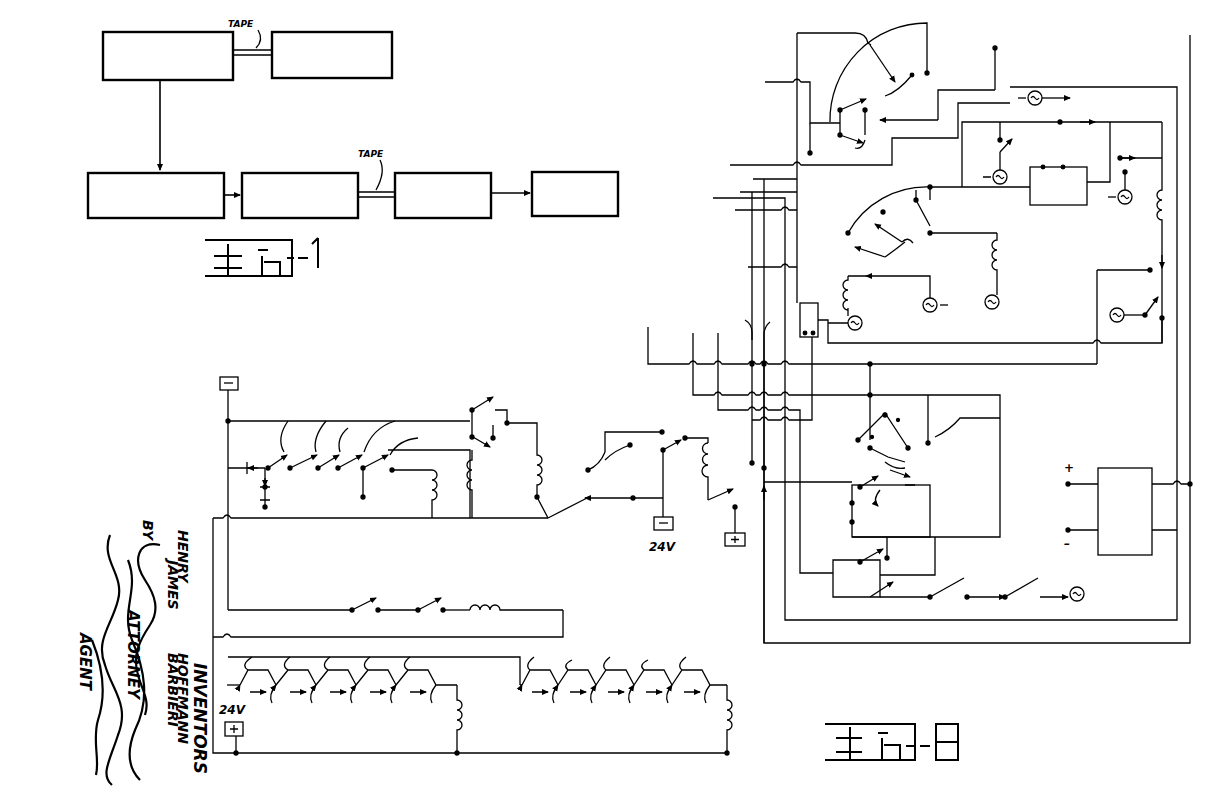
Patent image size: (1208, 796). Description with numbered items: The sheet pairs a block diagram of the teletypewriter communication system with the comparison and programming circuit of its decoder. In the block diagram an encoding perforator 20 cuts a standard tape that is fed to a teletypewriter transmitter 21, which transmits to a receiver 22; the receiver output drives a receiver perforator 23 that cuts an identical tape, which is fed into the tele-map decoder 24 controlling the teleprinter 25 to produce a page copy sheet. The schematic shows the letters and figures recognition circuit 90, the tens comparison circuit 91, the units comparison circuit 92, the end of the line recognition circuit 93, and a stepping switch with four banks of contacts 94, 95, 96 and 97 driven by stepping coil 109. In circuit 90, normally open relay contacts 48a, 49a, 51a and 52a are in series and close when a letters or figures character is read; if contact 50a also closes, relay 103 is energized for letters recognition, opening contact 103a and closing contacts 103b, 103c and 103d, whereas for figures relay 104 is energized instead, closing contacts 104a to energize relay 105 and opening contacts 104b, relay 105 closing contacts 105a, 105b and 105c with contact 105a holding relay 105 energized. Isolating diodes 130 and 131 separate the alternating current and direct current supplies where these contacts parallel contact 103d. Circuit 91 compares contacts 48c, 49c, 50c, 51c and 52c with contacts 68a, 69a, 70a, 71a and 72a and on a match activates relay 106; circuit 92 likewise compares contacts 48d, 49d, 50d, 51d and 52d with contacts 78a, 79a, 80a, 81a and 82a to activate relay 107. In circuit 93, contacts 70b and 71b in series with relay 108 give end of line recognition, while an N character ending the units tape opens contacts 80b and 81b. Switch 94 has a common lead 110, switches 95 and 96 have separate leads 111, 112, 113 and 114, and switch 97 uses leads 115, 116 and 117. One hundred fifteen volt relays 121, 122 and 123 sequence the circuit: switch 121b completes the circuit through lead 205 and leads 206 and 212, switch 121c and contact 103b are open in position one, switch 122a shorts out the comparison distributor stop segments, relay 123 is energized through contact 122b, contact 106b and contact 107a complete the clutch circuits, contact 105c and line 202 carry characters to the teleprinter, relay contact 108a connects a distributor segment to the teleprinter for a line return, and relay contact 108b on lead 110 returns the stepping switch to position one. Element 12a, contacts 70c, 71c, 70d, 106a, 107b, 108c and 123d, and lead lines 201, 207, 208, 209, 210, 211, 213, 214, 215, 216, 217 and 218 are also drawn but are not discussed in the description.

In FIG. 1, the encoding perforator 20 is at (334, 32).
In FIG. 1, the teletypewriter transmitter 21 is at (148, 32).
In FIG. 1, the receiver 22 is at (176, 173).
In FIG. 1, the receiver perforator 23 is at (294, 173).
In FIG. 1, the tele-map decoder 24 is at (444, 173).
In FIG. 1, the teleprinter 25 is at (568, 172).
In FIG. 6, the relay device 12a is at (795, 310).
In FIG. 6, the relay contact 48a is at (274, 436).
In FIG. 6, the relay contact 49a is at (307, 436).
In FIG. 6, the relay contact 50a is at (415, 471).
In FIG. 6, the relay contact 51a is at (335, 447).
In FIG. 6, the relay contact 52a is at (372, 436).
In FIG. 6, the relay contact 48c is at (258, 666).
In FIG. 6, the relay contact 49c is at (296, 666).
In FIG. 6, the relay contact 50c is at (336, 666).
In FIG. 6, the relay contact 51c is at (376, 666).
In FIG. 6, the relay contact 52c is at (426, 666).
In FIG. 6, the relay contact 48d is at (540, 667).
In FIG. 6, the relay contact 49d is at (577, 670).
In FIG. 6, the relay contact 50d is at (615, 666).
In FIG. 6, the relay contact 51d is at (652, 670).
In FIG. 6, the relay contact 52d is at (699, 666).
In FIG. 6, the relay contact 68a is at (274, 702).
In FIG. 6, the relay contact 69a is at (315, 702).
In FIG. 6, the relay contact 70a is at (360, 704).
In FIG. 6, the relay contact 71a is at (400, 702).
In FIG. 6, the relay contact 72a is at (437, 702).
In FIG. 6, the relay contact 78a is at (541, 702).
In FIG. 6, the relay contact 79a is at (588, 702).
In FIG. 6, the relay contact 80a is at (629, 702).
In FIG. 6, the relay contact 81a is at (668, 703).
In FIG. 6, the relay contact 82a is at (702, 702).
In FIG. 6, the relay contact 70b is at (362, 591).
In FIG. 6, the relay contact 71b is at (422, 604).
In FIG. 6, the switch contact 70c is at (942, 597).
In FIG. 6, the relay box 71c is at (884, 567).
In FIG. 6, the switch contact 70d is at (862, 558).
In FIG. 6, the relay contact 80b is at (1020, 163).
In FIG. 6, the relay contact 81b is at (1052, 206).
In FIG. 6, the letters and figures recognition circuit 90 is at (361, 412).
In FIG. 6, the tens comparison circuit 91 is at (330, 744).
In FIG. 6, the units comparison circuit 92 is at (610, 744).
In FIG. 6, the end of the line recognition circuit 93 is at (356, 639).
In FIG. 6, the stepping switch contact bank 94 is at (628, 490).
In FIG. 6, the stepping switch contact bank 95 is at (973, 445).
In FIG. 6, the stepping switch contact bank 96 is at (963, 275).
In FIG. 6, the stepping switch contact bank 97 is at (958, 77).
In FIG. 6, the relay 103 is at (445, 466).
In FIG. 6, the contact 103a is at (552, 520).
In FIG. 6, the contact 103b is at (1140, 149).
In FIG. 6, the contact 103c is at (1025, 588).
In FIG. 6, the contact 103d is at (877, 152).
In FIG. 6, the relay 104 is at (480, 487).
In FIG. 6, the contact 104a is at (501, 446).
In FIG. 6, the contact 104b is at (850, 520).
In FIG. 6, the relay 105 is at (542, 462).
In FIG. 6, the contact 105a is at (478, 400).
In FIG. 6, the switch 105b is at (866, 480).
In FIG. 6, the relay contact 105c is at (842, 108).
In FIG. 6, the relay 106 is at (464, 716).
In FIG. 6, the relay contact 106a is at (873, 253).
In FIG. 6, the switch contact 106b is at (910, 462).
In FIG. 6, the relay 107 is at (738, 708).
In FIG. 6, the relay contact 107a is at (897, 224).
In FIG. 6, the relay contact 107b is at (903, 423).
In FIG. 6, the relay 108 is at (490, 604).
In FIG. 6, the relay contact 108a is at (1080, 118).
In FIG. 6, the relay contact 108b is at (684, 455).
In FIG. 6, the relay contact 108c is at (1160, 266).
In FIG. 6, the stepping coil 109 is at (714, 460).
In FIG. 6, the common lead 110 is at (626, 432).
In FIG. 6, the lead 111 is at (878, 278).
In FIG. 6, the lead 112 is at (923, 485).
In FIG. 6, the lead 113 is at (948, 450).
In FIG. 6, the lead 114 is at (932, 236).
In FIG. 6, the lead 115 is at (880, 122).
In FIG. 6, the lead 116 is at (882, 62).
In FIG. 6, the lead 117 is at (930, 42).
In FIG. 6, the relay 121 is at (860, 292).
In FIG. 6, the switch 121b is at (1006, 148).
In FIG. 6, the switch 121c is at (1110, 114).
In FIG. 6, the relay 122 is at (997, 260).
In FIG. 6, the switch 122a is at (928, 203).
In FIG. 6, the relay contact 122b is at (1127, 316).
In FIG. 6, the relay 123 is at (1158, 214).
In FIG. 6, the relay contact 123d is at (736, 490).
In FIG. 6, the isolating diode 130 is at (270, 487).
In FIG. 6, the isolating diode 131 is at (250, 462).
In FIG. 6, the supply line 201 is at (233, 410).
In FIG. 6, the line 202 is at (1190, 60).
In FIG. 6, the lead 205 is at (755, 152).
In FIG. 6, the lead 206 is at (753, 179).
In FIG. 6, the line 207 is at (740, 192).
In FIG. 6, the line 208 is at (722, 198).
In FIG. 6, the line 209 is at (774, 82).
In FIG. 6, the line 210 is at (745, 212).
In FIG. 6, the line 211 is at (756, 270).
In FIG. 6, the lead 212 is at (648, 342).
In FIG. 6, the line 213 is at (690, 345).
In FIG. 6, the line 214 is at (718, 344).
In FIG. 6, the line 215 is at (735, 321).
In FIG. 6, the line 216 is at (770, 473).
In FIG. 6, the line 217 is at (1000, 64).
In FIG. 6, the line 218 is at (811, 140).